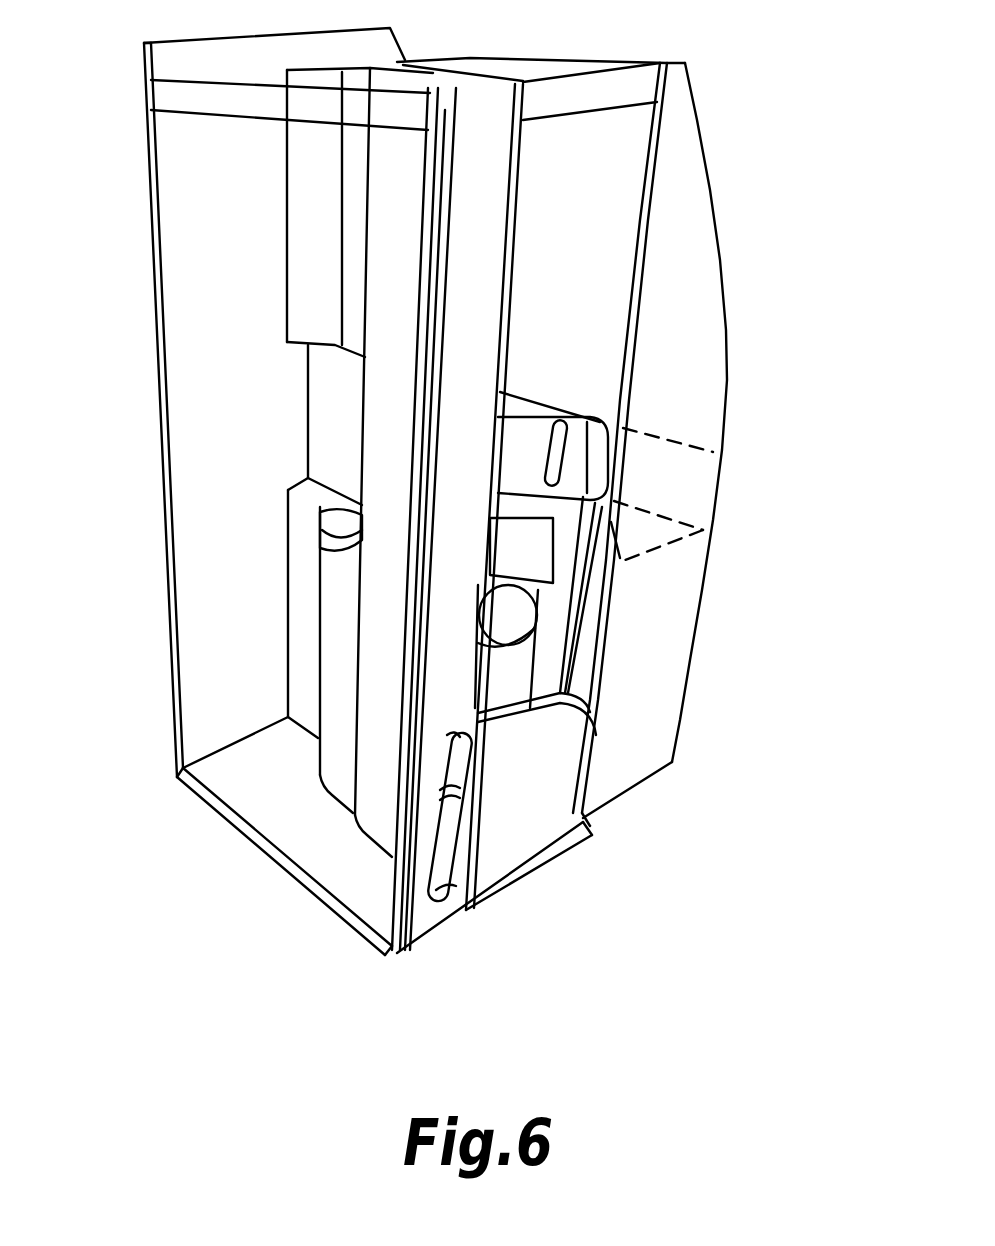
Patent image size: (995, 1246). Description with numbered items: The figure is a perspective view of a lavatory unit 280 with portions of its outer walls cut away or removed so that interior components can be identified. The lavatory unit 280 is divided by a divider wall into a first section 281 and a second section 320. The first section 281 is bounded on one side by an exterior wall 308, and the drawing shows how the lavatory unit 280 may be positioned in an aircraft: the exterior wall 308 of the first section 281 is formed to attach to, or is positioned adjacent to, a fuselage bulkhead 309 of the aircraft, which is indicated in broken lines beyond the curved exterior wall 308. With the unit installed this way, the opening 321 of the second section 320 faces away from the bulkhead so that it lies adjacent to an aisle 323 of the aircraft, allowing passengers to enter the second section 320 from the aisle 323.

The lavatory unit 280 is at (768, 108).
The first section 281 is at (578, 287).
The exterior wall 308 is at (728, 360).
The fuselage bulkhead 309 is at (646, 528).
The second section 320 is at (243, 548).
The opening 321 is at (203, 403).
The aisle 323 is at (187, 897).